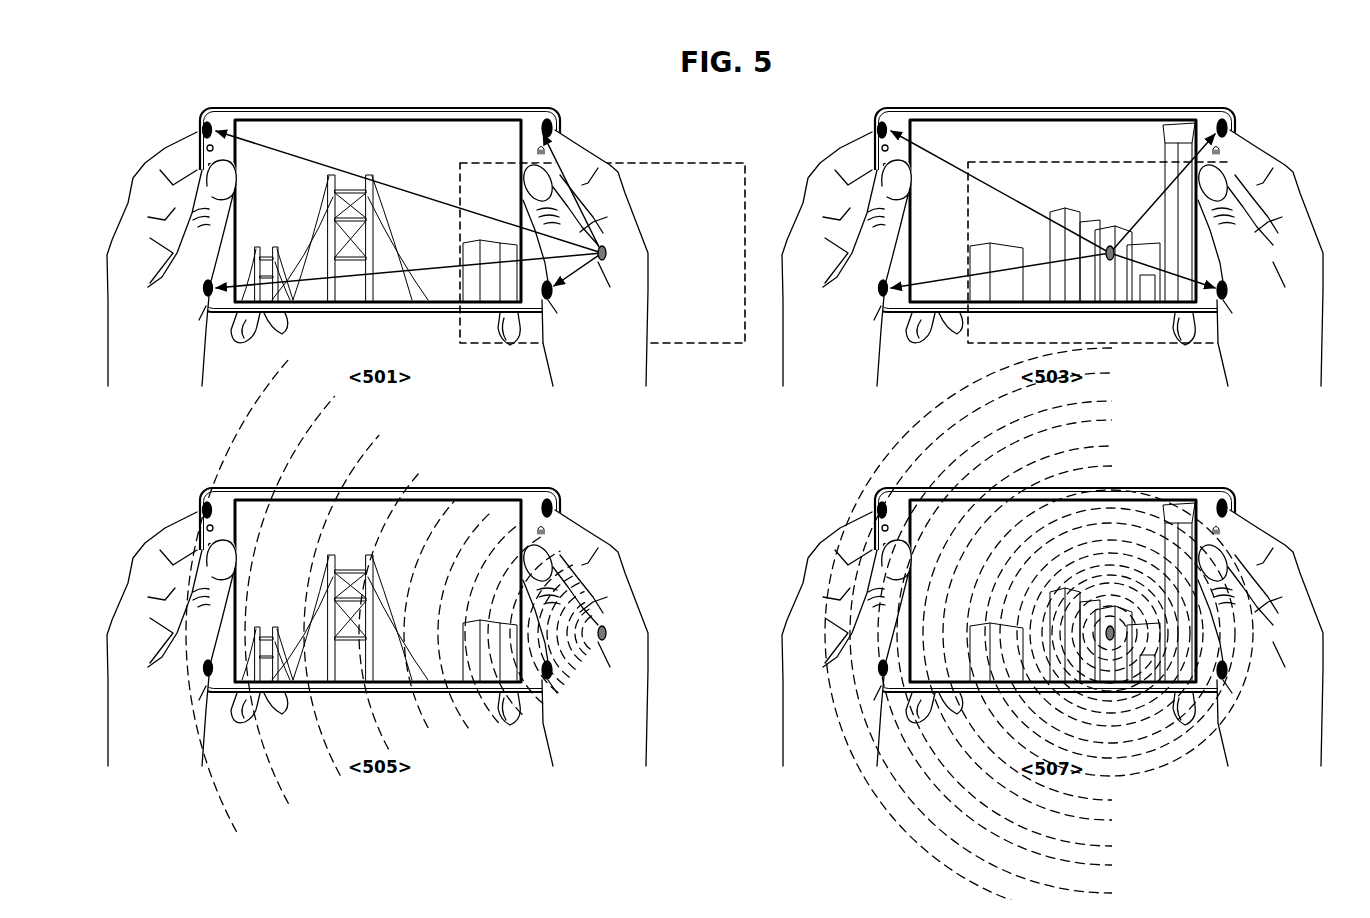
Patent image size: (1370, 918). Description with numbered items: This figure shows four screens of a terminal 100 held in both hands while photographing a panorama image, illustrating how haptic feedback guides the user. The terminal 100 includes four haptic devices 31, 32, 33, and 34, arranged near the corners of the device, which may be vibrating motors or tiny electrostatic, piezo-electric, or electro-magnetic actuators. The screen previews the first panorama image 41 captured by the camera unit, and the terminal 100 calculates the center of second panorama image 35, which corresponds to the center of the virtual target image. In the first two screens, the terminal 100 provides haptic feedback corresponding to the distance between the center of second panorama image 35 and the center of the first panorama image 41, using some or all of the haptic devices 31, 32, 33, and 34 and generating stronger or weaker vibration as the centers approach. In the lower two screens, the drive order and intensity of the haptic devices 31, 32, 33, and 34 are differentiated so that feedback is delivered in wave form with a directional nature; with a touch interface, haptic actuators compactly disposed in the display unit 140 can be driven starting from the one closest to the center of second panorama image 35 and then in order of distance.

The haptic device 31 is at (528, 313).
The haptic device 32 is at (899, 310).
The haptic device 33 is at (529, 486).
The haptic device 34 is at (899, 488).
The center of second panorama image 35 is at (1110, 624).
The first panorama image 41 is at (287, 146).
The terminal 100 is at (530, 104).
The display unit 140 is at (470, 491).